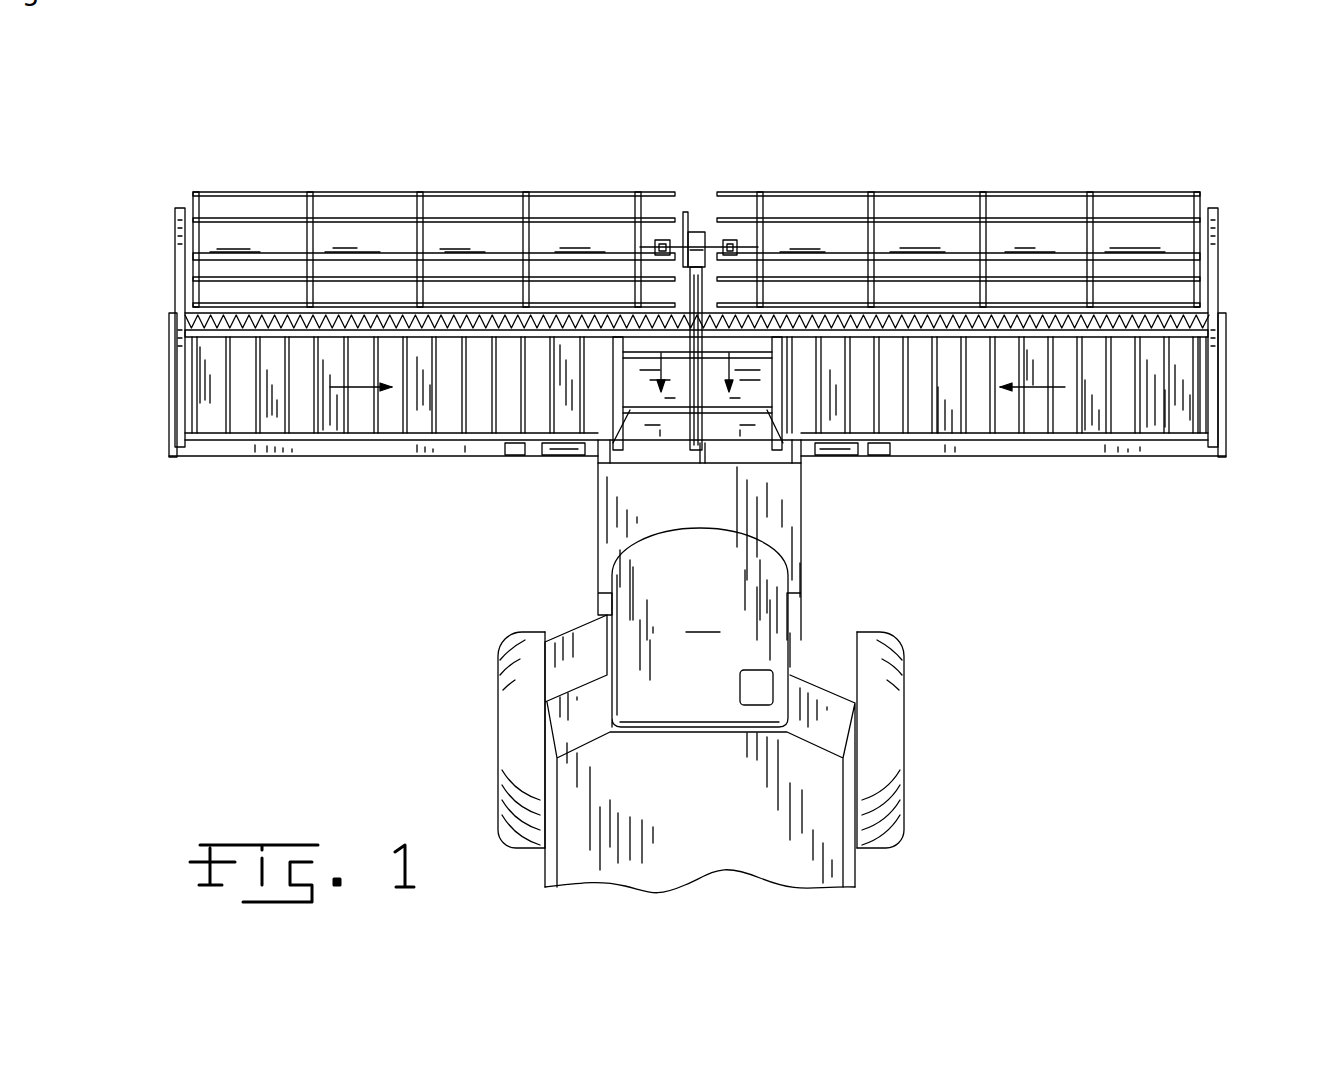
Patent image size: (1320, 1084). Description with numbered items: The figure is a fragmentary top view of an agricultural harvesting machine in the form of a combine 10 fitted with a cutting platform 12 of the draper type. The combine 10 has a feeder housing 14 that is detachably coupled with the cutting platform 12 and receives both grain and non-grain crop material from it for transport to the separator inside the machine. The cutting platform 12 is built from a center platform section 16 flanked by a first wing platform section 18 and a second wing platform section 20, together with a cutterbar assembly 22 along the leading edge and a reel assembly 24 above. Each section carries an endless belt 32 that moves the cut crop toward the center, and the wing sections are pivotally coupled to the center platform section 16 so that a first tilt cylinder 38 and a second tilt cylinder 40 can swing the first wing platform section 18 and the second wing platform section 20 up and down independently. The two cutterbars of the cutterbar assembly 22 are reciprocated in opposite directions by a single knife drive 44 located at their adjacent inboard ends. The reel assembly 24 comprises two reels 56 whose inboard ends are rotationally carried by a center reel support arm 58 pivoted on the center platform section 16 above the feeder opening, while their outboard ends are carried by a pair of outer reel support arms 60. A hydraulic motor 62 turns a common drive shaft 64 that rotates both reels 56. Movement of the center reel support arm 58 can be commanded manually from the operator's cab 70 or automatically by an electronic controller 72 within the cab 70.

The combine 10 is at (1013, 664).
The cutting platform 12 is at (1102, 162).
The feeder housing 14 is at (803, 520).
The center platform section 16 is at (620, 367).
The first wing platform section 18 is at (323, 465).
The second wing platform section 20 is at (1075, 465).
The cutterbar assembly 22 is at (1180, 330).
The reel assembly 24 is at (725, 180).
The endless belt 32 is at (250, 415).
The first tilt cylinder 38 is at (570, 457).
The second tilt cylinder 40 is at (838, 457).
The knife drive 44 is at (700, 330).
The reel 56 is at (455, 190).
The center reel support arm 58 is at (692, 390).
The outer reel support arm 60 is at (183, 262).
The hydraulic motor 62 is at (705, 262).
The drive shaft 64 is at (715, 245).
The operator's cab 70 is at (700, 627).
The electronic controller 72 is at (740, 690).